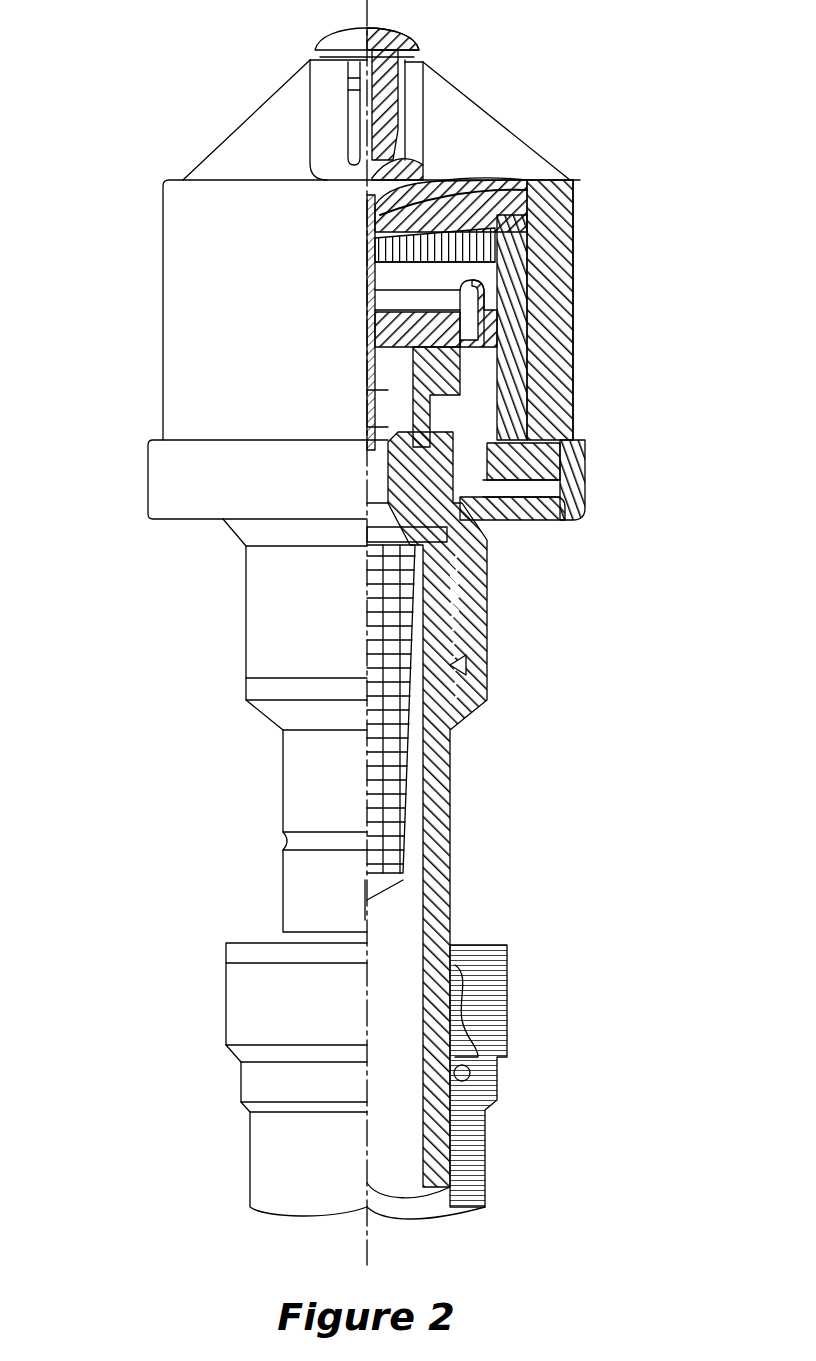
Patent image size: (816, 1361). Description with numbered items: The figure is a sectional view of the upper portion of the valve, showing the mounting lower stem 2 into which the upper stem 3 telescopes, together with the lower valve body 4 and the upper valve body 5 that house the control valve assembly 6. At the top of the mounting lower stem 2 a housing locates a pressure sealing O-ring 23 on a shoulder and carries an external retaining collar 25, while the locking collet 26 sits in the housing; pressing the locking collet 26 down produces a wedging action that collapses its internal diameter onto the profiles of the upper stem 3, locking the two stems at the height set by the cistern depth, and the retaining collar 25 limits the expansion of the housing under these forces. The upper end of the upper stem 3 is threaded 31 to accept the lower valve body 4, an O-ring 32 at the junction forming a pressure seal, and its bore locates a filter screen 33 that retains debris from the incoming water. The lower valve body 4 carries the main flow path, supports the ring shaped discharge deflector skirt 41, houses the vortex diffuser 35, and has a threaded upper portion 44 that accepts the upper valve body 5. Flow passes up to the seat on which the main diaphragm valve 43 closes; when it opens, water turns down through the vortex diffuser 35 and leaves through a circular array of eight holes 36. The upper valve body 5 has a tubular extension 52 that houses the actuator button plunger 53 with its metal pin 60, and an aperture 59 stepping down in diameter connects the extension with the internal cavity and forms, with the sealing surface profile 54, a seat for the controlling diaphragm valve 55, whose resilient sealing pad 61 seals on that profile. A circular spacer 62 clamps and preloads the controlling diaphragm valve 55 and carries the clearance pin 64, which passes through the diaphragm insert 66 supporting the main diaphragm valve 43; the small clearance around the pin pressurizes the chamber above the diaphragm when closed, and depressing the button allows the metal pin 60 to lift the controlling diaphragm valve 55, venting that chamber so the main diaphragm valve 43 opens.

The mounting lower stem 2 is at (258, 1175).
The upper stem 3 is at (312, 800).
The lower valve body 4 is at (264, 628).
The upper valve body 5 is at (240, 155).
The control valve assembly 6 is at (585, 160).
The pressure sealing O-ring 23 is at (493, 1098).
The retaining collar 25 is at (232, 1028).
The locking collet 26 is at (235, 958).
The thread 31 is at (460, 583).
The O-ring 32 is at (458, 670).
The filter screen 33 is at (395, 782).
The vortex diffuser 35 is at (445, 385).
The discharge holes 36 is at (577, 520).
The discharge deflector skirt 41 is at (182, 490).
The main diaphragm valve 43 is at (470, 340).
The threaded upper portion 44 is at (540, 390).
The tubular extension 52 is at (327, 100).
The actuator button plunger 53 is at (332, 45).
The sealing surface profile 54 is at (387, 220).
The controlling diaphragm valve 55 is at (530, 183).
The aperture 59 is at (372, 197).
The metal pin 60 is at (422, 165).
The resilient sealing pad 61 is at (575, 178).
The spacer 62 is at (540, 226).
The clearance pin 64 is at (375, 282).
The diaphragm insert 66 is at (420, 368).